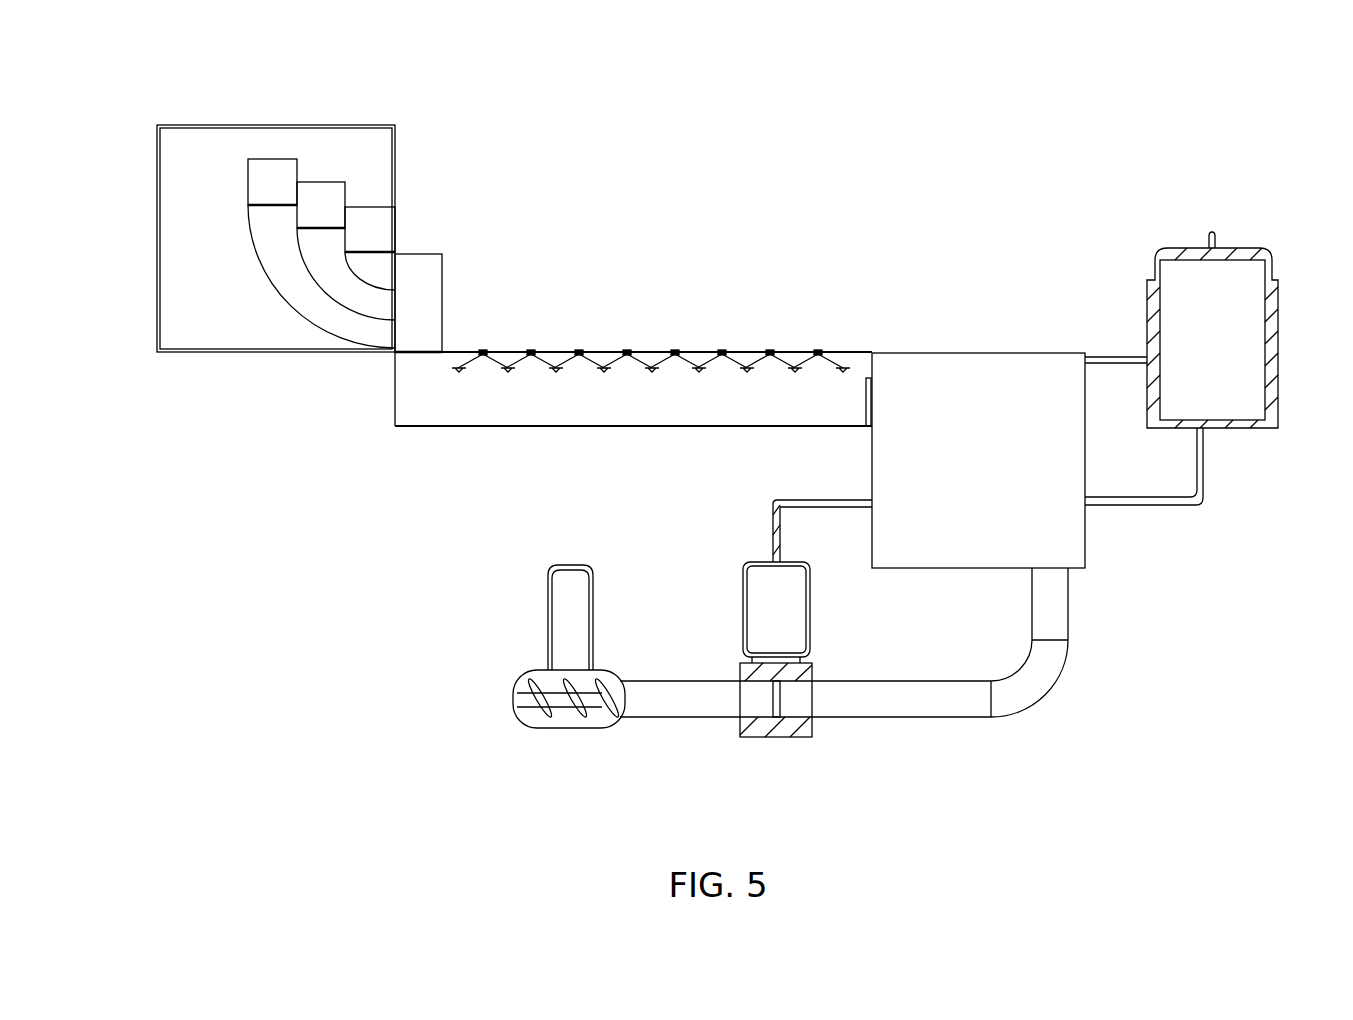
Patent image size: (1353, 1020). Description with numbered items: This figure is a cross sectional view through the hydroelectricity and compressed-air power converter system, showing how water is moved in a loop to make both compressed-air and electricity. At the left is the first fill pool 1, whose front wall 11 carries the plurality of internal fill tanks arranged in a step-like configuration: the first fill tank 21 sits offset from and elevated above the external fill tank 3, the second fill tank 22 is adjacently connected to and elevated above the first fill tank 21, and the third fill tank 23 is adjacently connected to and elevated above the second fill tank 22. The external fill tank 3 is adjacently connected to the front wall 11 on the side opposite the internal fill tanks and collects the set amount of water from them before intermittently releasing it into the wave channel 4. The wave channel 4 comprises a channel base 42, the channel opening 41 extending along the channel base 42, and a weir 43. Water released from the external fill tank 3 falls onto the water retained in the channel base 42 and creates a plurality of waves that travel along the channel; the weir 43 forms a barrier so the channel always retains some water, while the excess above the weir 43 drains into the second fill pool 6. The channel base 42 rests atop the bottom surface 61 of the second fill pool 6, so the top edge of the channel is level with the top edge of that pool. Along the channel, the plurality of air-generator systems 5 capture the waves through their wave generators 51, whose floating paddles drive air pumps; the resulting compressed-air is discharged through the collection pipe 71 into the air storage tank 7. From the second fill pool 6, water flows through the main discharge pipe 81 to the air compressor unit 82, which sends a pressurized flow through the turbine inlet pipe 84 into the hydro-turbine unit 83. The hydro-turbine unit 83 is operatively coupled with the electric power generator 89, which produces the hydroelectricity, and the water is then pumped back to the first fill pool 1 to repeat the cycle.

The first fill pool 1 is at (283, 238).
The front wall 11 is at (396, 150).
The first fill tank 21 is at (385, 220).
The second fill tank 22 is at (312, 188).
The third fill tank 23 is at (262, 217).
The external fill tank 3 is at (446, 287).
The wave channel 4 is at (641, 420).
The channel opening 41 is at (410, 389).
The channel base 42 is at (618, 428).
The weir 43 is at (872, 400).
The air-generator system 5 is at (651, 307).
The wave generator 51 is at (627, 344).
The second fill pool 6 is at (844, 570).
The bottom surface 61 is at (912, 568).
The air storage tank 7 is at (1239, 295).
The collection pipe 71 is at (1212, 232).
The main discharge pipe 81 is at (978, 716).
The air compressor unit 82 is at (745, 598).
The hydro-turbine unit 83 is at (560, 729).
The turbine inlet pipe 84 is at (663, 718).
The electric power generator 89 is at (550, 602).